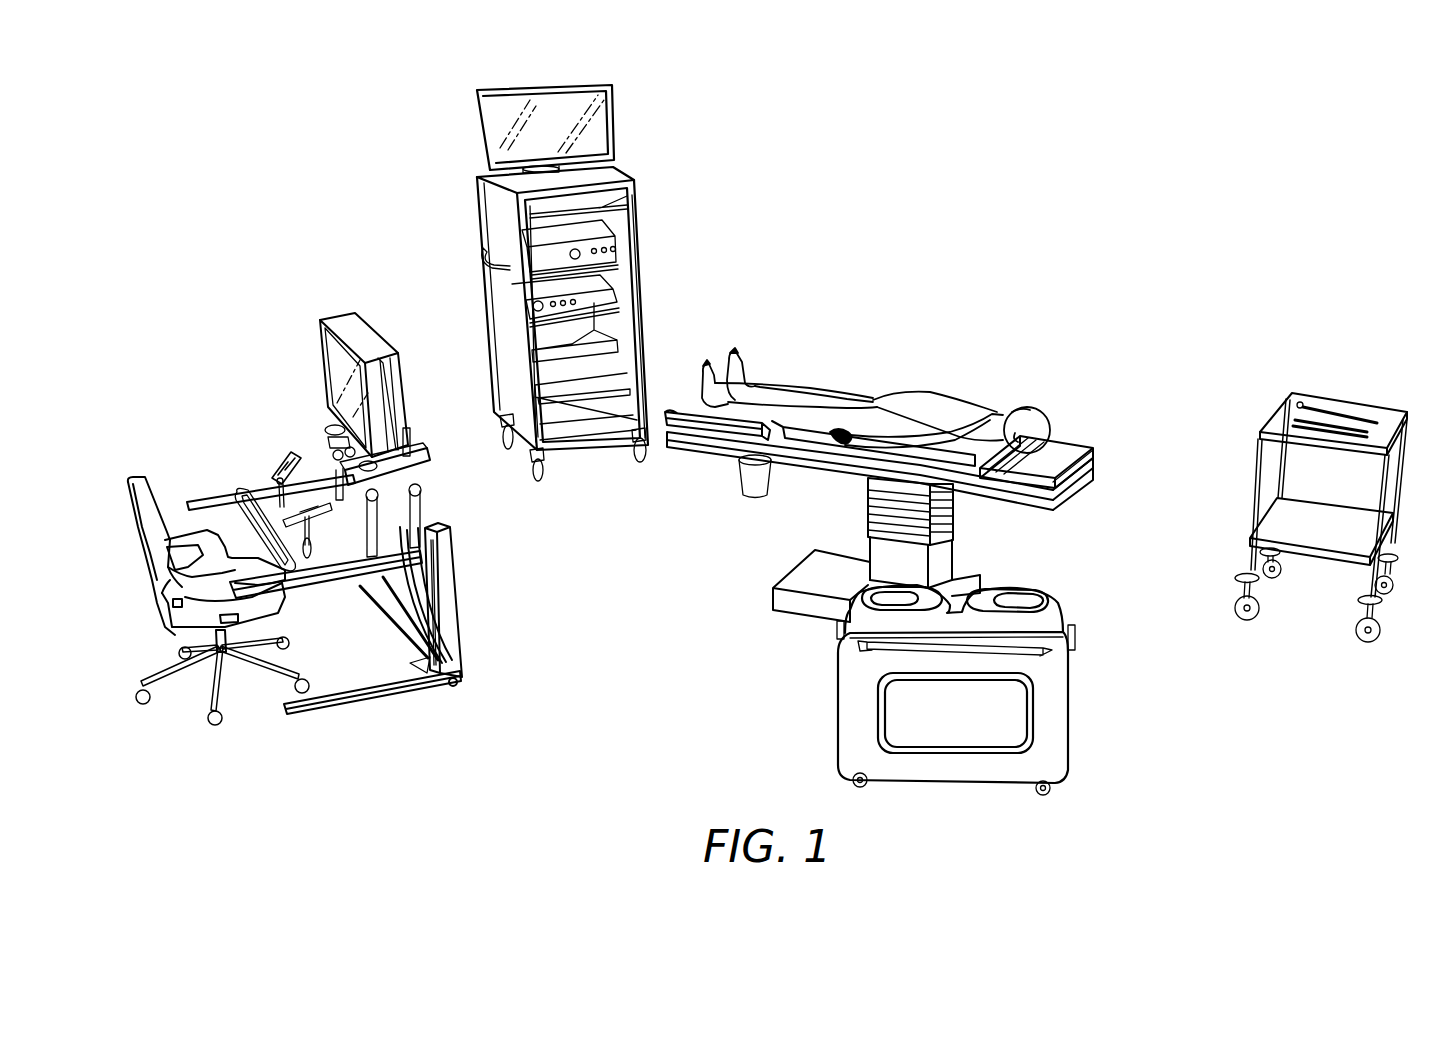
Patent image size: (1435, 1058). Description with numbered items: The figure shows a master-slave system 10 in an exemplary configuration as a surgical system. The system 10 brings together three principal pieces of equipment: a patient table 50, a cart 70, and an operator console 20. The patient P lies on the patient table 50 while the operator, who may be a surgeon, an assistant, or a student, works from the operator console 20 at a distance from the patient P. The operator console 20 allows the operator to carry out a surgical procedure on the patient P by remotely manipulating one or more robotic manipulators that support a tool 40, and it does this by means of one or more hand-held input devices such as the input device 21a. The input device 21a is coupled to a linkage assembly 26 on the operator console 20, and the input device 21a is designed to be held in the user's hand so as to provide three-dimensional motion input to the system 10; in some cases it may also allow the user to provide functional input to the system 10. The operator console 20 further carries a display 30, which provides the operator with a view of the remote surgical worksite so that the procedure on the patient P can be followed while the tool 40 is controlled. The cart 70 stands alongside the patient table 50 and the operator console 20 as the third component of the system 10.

The master-slave system 10 is at (1194, 270).
The operator console 20 is at (242, 331).
The input device 21a is at (272, 474).
The linkage assembly 26 is at (431, 512).
The display 30 is at (321, 318).
The tool 40 is at (1345, 413).
The patient table 50 is at (1074, 432).
The cart 70 is at (639, 205).
The patient P is at (925, 398).